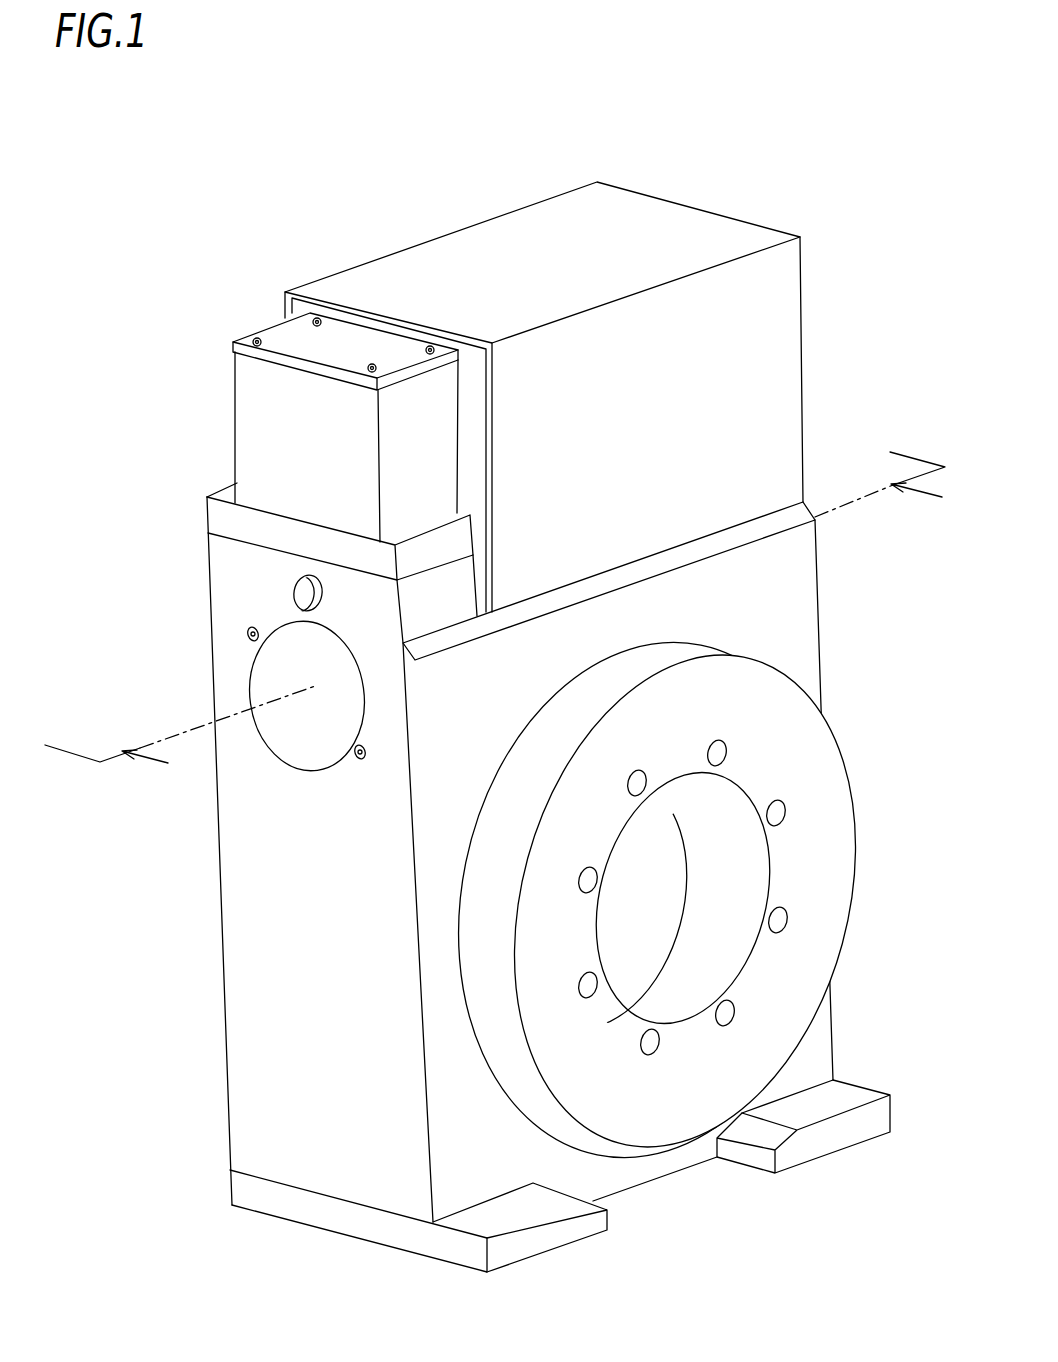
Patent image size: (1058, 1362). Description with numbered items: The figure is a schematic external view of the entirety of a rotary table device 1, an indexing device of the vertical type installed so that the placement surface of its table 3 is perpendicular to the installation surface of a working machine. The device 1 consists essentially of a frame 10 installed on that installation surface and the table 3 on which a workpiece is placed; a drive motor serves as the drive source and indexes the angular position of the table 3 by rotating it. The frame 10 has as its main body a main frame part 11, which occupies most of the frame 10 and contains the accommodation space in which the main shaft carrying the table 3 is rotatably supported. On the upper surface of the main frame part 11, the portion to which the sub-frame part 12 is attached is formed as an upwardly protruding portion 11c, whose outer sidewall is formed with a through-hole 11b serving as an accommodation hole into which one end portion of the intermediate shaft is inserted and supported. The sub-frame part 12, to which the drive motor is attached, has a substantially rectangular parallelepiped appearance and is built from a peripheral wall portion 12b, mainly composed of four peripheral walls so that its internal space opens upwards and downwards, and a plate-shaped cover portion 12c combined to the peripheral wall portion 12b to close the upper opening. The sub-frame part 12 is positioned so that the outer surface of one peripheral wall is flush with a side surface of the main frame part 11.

The rotary table device 1 is at (799, 144).
The table 3 is at (816, 824).
The frame 10 is at (155, 1186).
The main frame part 11 is at (207, 1015).
The through-hole 11b is at (277, 590).
The protruding portion 11c is at (227, 557).
The sub-frame part 12 is at (281, 414).
The peripheral wall portion 12b is at (272, 468).
The cover portion 12c is at (297, 337).